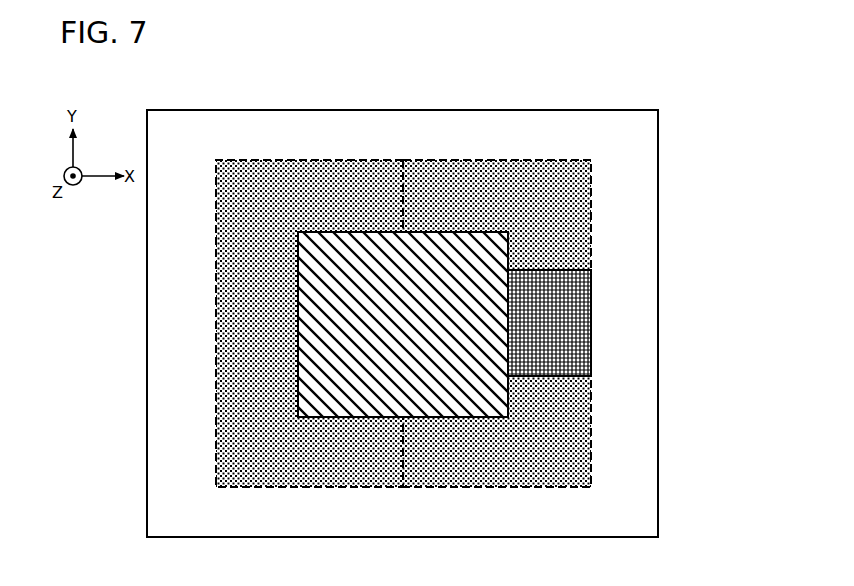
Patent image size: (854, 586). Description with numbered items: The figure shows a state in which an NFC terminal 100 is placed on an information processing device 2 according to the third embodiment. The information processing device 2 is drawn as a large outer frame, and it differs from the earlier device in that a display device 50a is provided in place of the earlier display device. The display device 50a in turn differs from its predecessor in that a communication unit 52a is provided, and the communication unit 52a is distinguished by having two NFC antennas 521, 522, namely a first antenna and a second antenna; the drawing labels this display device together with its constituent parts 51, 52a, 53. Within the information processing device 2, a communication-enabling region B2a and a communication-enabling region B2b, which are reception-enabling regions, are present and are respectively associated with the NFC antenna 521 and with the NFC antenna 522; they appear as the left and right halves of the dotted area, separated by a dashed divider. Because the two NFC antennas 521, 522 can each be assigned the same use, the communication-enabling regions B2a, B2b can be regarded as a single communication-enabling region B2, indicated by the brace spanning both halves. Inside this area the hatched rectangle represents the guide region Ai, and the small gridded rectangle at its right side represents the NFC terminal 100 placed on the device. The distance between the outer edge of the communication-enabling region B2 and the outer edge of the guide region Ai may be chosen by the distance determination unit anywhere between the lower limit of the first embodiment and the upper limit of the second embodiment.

The information processing device 2 is at (673, 94).
The display device 50a is at (403, 257).
The first layer 51 is at (403, 257).
The communication unit 52a is at (403, 257).
The third layer 53 is at (403, 257).
The communication-enabling region B2 is at (403, 257).
The communication-enabling region B2a is at (309, 276).
The NFC antenna 521 is at (313, 163).
The communication-enabling region B2b is at (454, 276).
The NFC antenna 522 is at (423, 158).
The NFC terminal 100 is at (560, 270).
The guide region Ai is at (305, 324).